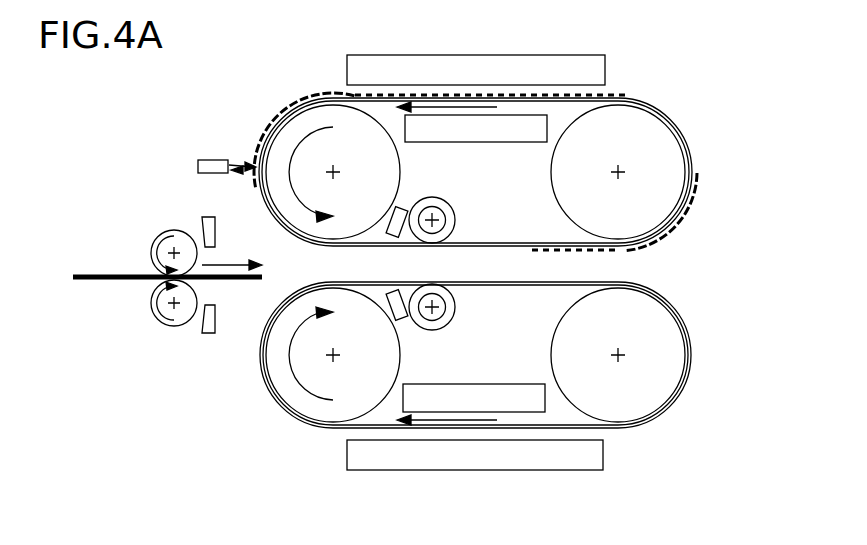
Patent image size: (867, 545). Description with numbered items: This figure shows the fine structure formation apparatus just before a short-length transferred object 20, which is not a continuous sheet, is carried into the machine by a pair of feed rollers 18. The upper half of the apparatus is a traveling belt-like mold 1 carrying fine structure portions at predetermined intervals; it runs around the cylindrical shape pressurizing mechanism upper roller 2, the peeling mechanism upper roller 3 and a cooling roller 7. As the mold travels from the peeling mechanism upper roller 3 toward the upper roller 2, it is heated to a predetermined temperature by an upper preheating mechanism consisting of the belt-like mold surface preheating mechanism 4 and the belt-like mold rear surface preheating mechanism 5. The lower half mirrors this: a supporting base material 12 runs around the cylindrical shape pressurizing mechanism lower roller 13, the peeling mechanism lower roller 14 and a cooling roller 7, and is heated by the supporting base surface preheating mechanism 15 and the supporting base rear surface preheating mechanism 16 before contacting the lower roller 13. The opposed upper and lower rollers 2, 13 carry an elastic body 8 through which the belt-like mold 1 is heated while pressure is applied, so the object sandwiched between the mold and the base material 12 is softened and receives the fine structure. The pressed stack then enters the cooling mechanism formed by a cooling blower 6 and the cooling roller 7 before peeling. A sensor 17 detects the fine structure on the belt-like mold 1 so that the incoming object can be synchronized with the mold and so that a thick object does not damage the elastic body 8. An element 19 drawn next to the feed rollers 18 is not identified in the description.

The belt-like mold 1 is at (697, 178).
The cylindrical shape pressurizing mechanism upper roller 2 is at (320, 118).
The peeling mechanism upper roller 3 is at (632, 116).
The belt-like mold surface preheating mechanism 4 is at (480, 55).
The belt-like mold rear surface preheating mechanism 5 is at (498, 143).
The cooling blower 6 is at (405, 207).
The cooling roller 7 is at (441, 200).
The elastic body 8 is at (270, 132).
The supporting base material 12 is at (608, 428).
The cylindrical shape pressurizing mechanism lower roller 13 is at (318, 408).
The peeling mechanism lower roller 14 is at (631, 407).
The supporting base surface preheating mechanism 15 is at (480, 470).
The supporting base rear surface preheating mechanism 16 is at (498, 385).
The sensor 17 is at (212, 160).
The feed rollers 18 is at (173, 231).
The guide member 19 is at (211, 229).
The short-length transferred object 20 is at (112, 273).